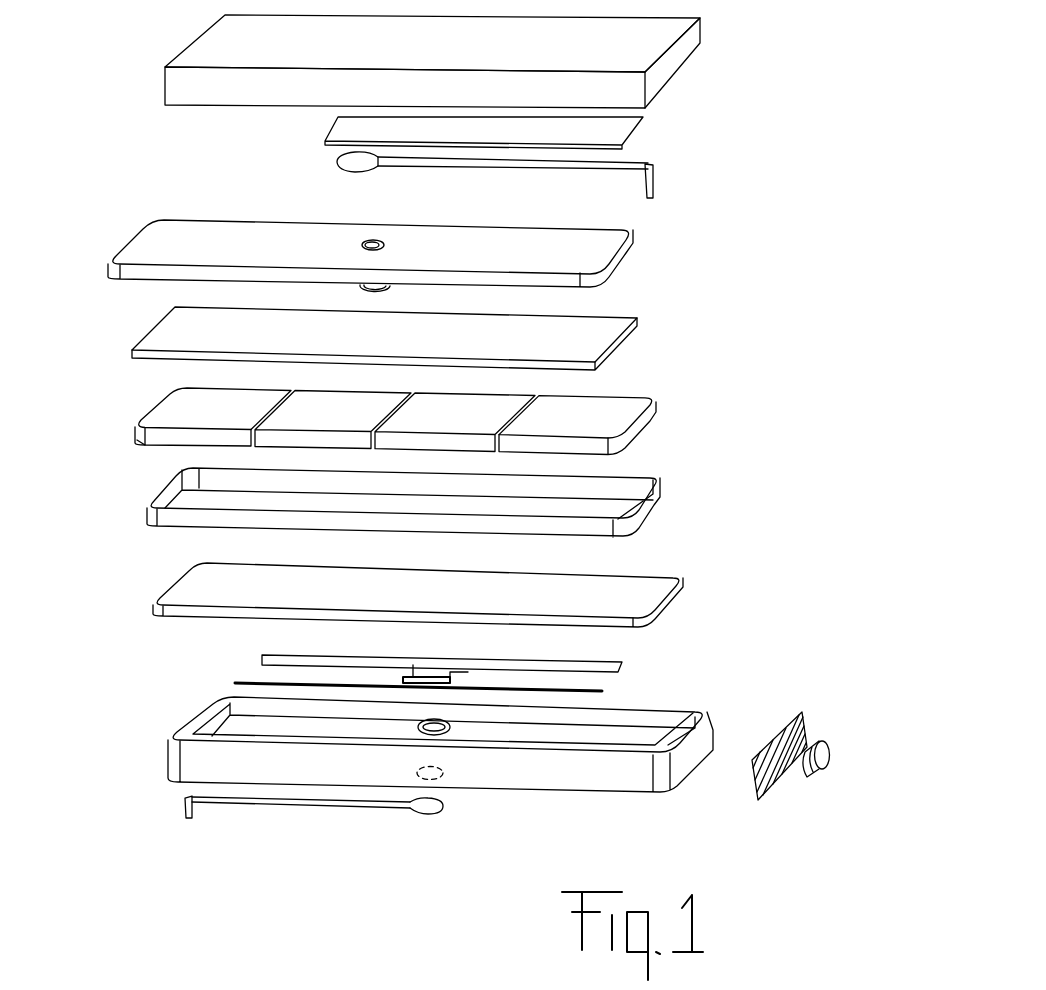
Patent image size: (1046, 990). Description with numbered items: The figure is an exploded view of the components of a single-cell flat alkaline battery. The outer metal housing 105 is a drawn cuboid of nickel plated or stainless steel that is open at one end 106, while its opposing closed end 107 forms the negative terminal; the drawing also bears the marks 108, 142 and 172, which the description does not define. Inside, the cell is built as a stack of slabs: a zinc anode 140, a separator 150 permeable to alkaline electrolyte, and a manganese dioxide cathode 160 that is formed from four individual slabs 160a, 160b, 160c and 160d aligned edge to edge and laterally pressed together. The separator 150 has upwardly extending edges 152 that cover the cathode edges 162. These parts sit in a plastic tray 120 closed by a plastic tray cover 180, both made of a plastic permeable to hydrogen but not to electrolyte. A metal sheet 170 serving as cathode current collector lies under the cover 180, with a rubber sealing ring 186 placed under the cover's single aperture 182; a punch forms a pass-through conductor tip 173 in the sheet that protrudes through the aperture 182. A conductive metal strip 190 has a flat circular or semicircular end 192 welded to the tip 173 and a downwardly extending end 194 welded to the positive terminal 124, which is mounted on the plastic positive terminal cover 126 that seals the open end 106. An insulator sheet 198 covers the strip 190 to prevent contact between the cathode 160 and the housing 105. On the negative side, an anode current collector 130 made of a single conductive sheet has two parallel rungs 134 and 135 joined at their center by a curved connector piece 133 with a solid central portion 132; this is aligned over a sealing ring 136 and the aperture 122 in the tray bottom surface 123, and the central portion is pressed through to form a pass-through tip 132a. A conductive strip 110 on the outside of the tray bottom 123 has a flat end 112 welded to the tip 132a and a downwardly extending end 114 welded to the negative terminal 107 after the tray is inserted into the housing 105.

The outer housing 105 is at (435, 84).
The open end 106 is at (686, 63).
The negative terminal 107 is at (195, 45).
The cover front surface 108 is at (215, 90).
The conductive strip 110 is at (302, 830).
The flat portion 112 is at (433, 822).
The downwardly extending surface 114 is at (185, 812).
The plastic tray 120 is at (471, 764).
The aperture 122 is at (445, 778).
The bottom surface 123 is at (610, 795).
The positive terminal 124 is at (818, 770).
The positive terminal cover 126 is at (802, 713).
The anode current collector 130 is at (441, 666).
The central portion 132 is at (460, 671).
The pass thru tip 132a is at (430, 686).
The connector piece 133 is at (455, 675).
The rung 134 is at (280, 657).
The rung 135 is at (243, 678).
The sealing ring 136 is at (452, 727).
The anode 140 is at (451, 587).
The plate upper surface 142 is at (377, 578).
The separator 150 is at (413, 515).
The separator edges 152 is at (172, 527).
The cathode 160 is at (406, 422).
The MnO2 slab 160a is at (167, 413).
The MnO2 slab 160b is at (313, 407).
The MnO2 slab 160c is at (433, 410).
The MnO2 slab 160d is at (560, 410).
The cathode edges 162 is at (155, 445).
The metal sheet 170 is at (389, 326).
The sheet edge 172 is at (130, 347).
The passthrough conductor tip 173 is at (365, 330).
The plastic tray cover 180 is at (403, 247).
The aperture 182 is at (366, 240).
The sealing ring 186 is at (387, 293).
The conductive metal strip 190 is at (528, 180).
The flat circular or semicircular surface 192 is at (367, 173).
The downwardly extending surface 194 is at (657, 177).
The insulator sheet 198 is at (630, 128).